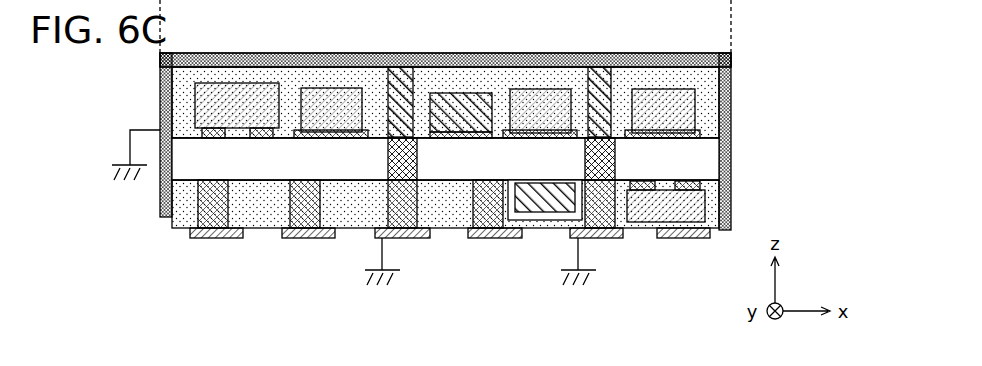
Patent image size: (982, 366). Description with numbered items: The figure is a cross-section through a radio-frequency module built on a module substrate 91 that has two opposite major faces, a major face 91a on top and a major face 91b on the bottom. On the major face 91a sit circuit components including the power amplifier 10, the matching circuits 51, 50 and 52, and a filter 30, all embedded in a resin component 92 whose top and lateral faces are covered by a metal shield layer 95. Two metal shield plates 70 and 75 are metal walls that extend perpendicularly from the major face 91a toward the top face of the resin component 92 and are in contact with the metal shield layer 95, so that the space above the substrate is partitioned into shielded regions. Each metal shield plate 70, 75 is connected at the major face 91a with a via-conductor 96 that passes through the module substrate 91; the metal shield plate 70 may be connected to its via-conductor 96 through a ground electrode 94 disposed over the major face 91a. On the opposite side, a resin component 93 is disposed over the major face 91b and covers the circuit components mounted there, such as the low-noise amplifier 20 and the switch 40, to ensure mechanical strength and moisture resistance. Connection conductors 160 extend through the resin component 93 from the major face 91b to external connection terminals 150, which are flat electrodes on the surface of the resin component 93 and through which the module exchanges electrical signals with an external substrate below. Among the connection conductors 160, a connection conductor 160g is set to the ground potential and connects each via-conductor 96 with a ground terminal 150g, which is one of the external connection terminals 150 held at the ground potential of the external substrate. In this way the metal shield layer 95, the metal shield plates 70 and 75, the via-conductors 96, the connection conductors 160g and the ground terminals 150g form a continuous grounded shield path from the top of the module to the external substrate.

The power amplifier 10 is at (242, 96).
The matching circuit 51 is at (310, 96).
The ground electrode 94 is at (385, 135).
The metal shield plate 70 is at (398, 75).
The filter 30 is at (468, 97).
The matching circuit 50 is at (566, 97).
The metal shield plate 75 is at (600, 72).
The metal shield layer 95 is at (645, 56).
The matching circuit 52 is at (680, 97).
The resin component 92 is at (724, 72).
The major face 91a is at (719, 130).
The module substrate 91 is at (712, 155).
The major face 91b is at (712, 180).
The resin component 93 is at (712, 205).
The low-noise amplifier 20 is at (700, 215).
The via-conductor 96 is at (585, 165).
The connection conductor 160 is at (228, 200).
The connection conductor 160g is at (417, 200).
The external connection terminal 150 is at (305, 240).
The ground terminal 150g is at (215, 240).
The switch 40 is at (545, 208).